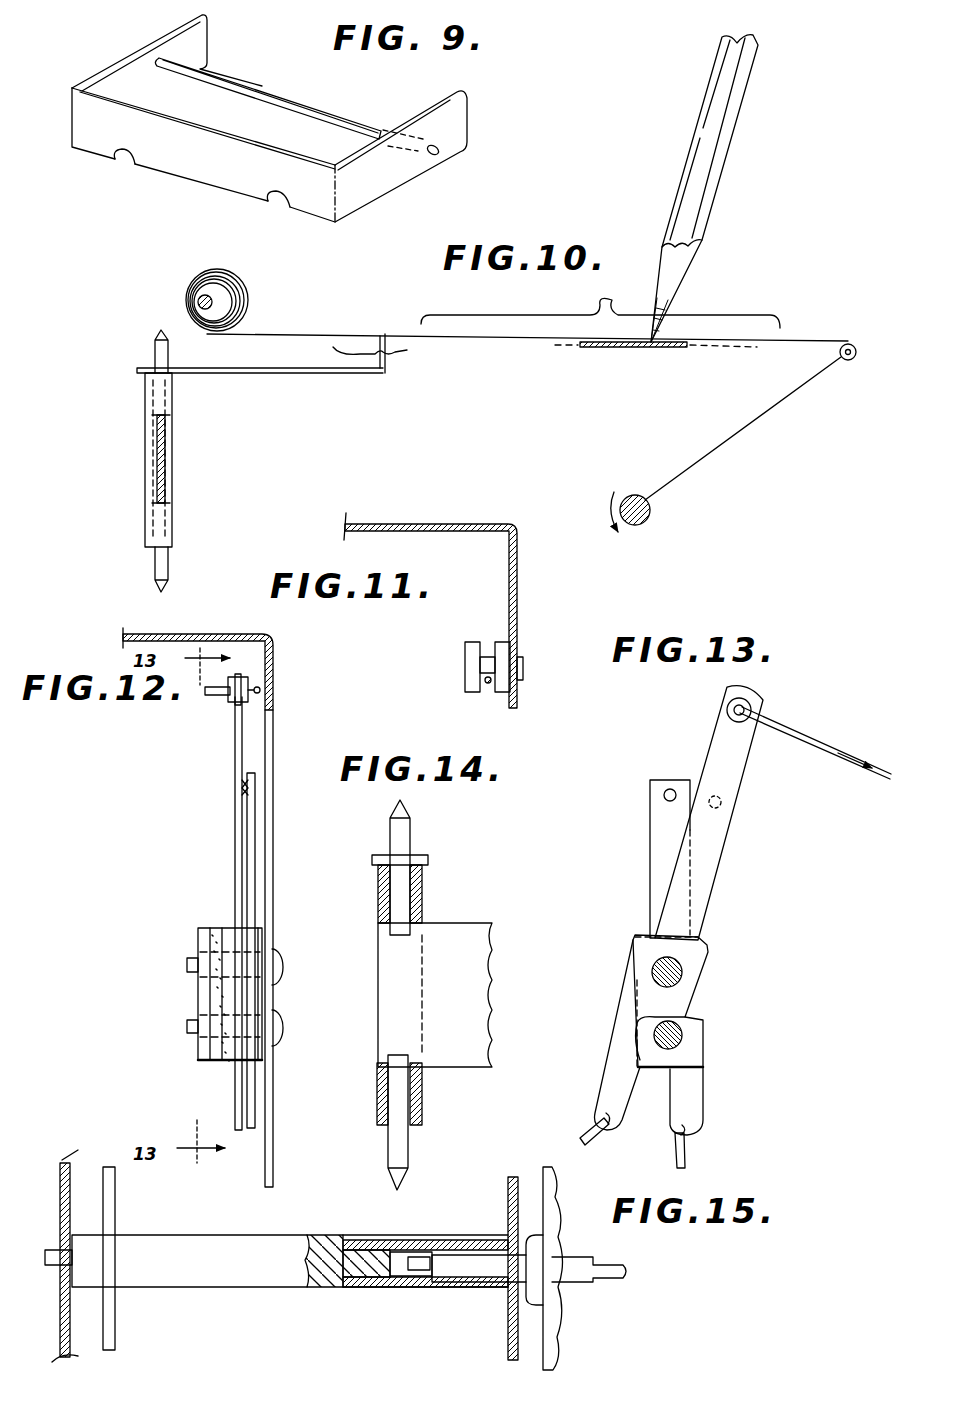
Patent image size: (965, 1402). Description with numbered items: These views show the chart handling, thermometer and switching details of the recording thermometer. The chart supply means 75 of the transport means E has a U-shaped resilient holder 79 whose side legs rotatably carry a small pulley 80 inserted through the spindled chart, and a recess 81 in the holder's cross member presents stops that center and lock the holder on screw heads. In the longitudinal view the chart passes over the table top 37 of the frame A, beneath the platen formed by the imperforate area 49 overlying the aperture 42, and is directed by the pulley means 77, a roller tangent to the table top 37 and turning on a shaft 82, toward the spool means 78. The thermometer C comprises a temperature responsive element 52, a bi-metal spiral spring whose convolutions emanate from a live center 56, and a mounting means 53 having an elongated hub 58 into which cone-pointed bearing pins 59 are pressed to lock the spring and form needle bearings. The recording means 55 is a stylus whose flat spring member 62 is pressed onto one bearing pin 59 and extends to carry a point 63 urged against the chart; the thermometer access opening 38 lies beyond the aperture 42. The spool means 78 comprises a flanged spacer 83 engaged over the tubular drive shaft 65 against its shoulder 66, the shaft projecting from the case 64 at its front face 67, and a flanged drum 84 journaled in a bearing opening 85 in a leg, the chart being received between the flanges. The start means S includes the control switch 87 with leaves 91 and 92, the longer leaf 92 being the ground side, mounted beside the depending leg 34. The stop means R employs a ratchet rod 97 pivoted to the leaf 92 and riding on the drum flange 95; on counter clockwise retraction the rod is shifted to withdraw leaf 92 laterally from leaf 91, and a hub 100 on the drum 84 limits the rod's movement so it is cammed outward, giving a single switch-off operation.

In FIG. 9, the chart supply means 75 is at (185, 176).
In FIG. 9, the holder 79 is at (395, 178).
In FIG. 9, the pulley 80 is at (322, 107).
In FIG. 9, the recess 81 is at (120, 170).
In FIG. 10, the table top 37 is at (695, 342).
In FIG. 11, the table top 37 is at (428, 523).
In FIG. 10, the thermometer access opening 38 is at (372, 375).
In FIG. 10, the imperforate area 49 is at (600, 188).
In FIG. 10, the aperture 42 is at (600, 300).
In FIG. 10, the temperature responsive element 52 is at (165, 487).
In FIG. 14, the temperature responsive element 52 is at (487, 920).
In FIG. 10, the mounting means 53 is at (178, 460).
In FIG. 14, the mounting means 53 is at (428, 880).
In FIG. 10, the recording means 55 is at (282, 372).
In FIG. 10, the hub 58 is at (146, 407).
In FIG. 14, the hub 58 is at (377, 1100).
In FIG. 10, the bearing pins 59 is at (155, 352).
In FIG. 14, the bearing pins 59 is at (400, 830).
In FIG. 10, the flat spring member 62 is at (242, 364).
In FIG. 10, the point 63 is at (383, 335).
In FIG. 10, the pulley means 77 is at (858, 358).
In FIG. 10, the spool means 78 is at (652, 508).
In FIG. 15, the spool means 78 is at (237, 1288).
In FIG. 10, the shaft 82 is at (838, 352).
In FIG. 12, the leg 34 is at (275, 840).
In FIG. 12, the control switch 87 is at (197, 938).
In FIG. 13, the control switch 87 is at (718, 955).
In FIG. 12, the leaf 91 is at (256, 807).
In FIG. 13, the leaf 91 is at (660, 844).
In FIG. 12, the leaf 92 is at (233, 858).
In FIG. 13, the leaf 92 is at (713, 847).
In FIG. 12, the ratchet rod 97 is at (262, 688).
In FIG. 13, the ratchet rod 97 is at (802, 747).
In FIG. 14, the live center 56 is at (388, 975).
In FIG. 15, the case 64 is at (560, 1197).
In FIG. 15, the drive shaft 65 is at (450, 1275).
In FIG. 15, the shoulder 66 is at (517, 1293).
In FIG. 15, the front face 67 is at (543, 1325).
In FIG. 15, the flanged spacer 83 is at (468, 1240).
In FIG. 15, the flanged drum 84 is at (195, 1245).
In FIG. 15, the bearing opening 85 is at (60, 1262).
In FIG. 15, the flange 95 is at (115, 1215).
In FIG. 15, the hub 100 is at (85, 1280).
In FIG. 12, the frame A is at (165, 632).
In FIG. 15, the frame A is at (58, 1188).
In FIG. 10, the thermometer C is at (143, 465).
In FIG. 14, the thermometer C is at (460, 990).
In FIG. 10, the transport means E is at (313, 312).
In FIG. 12, the stop means R is at (225, 698).
In FIG. 13, the stop means R is at (856, 753).
In FIG. 12, the start means S is at (228, 793).
In FIG. 13, the start means S is at (645, 809).